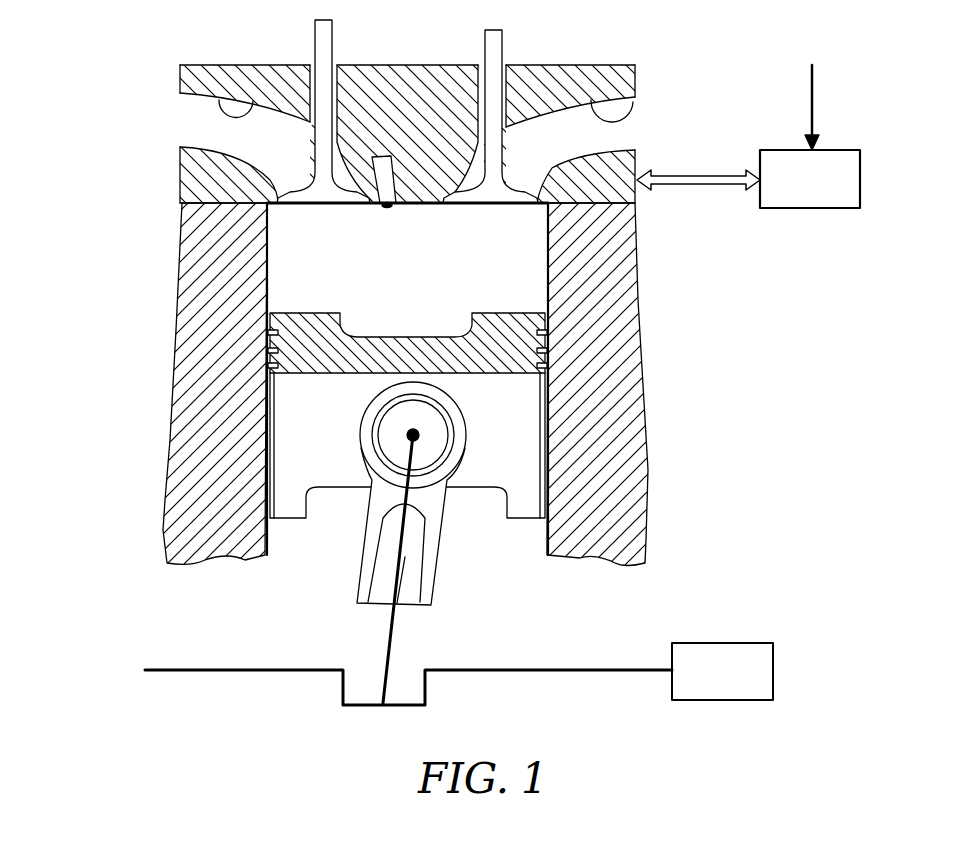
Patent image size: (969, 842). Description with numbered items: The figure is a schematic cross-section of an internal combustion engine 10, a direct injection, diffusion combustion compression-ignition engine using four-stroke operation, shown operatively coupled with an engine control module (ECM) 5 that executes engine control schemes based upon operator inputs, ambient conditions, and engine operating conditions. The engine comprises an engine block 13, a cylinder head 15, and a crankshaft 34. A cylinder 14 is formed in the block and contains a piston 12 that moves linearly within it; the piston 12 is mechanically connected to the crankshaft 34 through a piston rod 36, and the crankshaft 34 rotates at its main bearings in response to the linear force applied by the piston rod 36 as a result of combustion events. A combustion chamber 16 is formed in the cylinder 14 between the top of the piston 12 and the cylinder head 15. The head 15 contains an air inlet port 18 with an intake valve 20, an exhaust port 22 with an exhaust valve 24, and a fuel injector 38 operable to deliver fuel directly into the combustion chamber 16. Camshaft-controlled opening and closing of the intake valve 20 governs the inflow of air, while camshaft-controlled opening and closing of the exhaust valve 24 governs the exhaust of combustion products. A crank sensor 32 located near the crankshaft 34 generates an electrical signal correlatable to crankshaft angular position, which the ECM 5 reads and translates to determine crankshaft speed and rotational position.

The engine control module (ECM) 5 is at (848, 160).
The internal combustion engine 10 is at (140, 95).
The piston 12 is at (310, 313).
The engine block 13 is at (203, 362).
The cylinder 14 is at (267, 282).
The cylinder head 15 is at (210, 178).
The combustion chamber 16 is at (517, 293).
The air inlet port 18 is at (215, 98).
The intake valve 20 is at (318, 198).
The exhaust port 22 is at (636, 107).
The exhaust valve 24 is at (495, 197).
The crank sensor 32 is at (743, 650).
The crankshaft 34 is at (343, 690).
The piston rod 36 is at (370, 558).
The fuel injector 38 is at (383, 205).